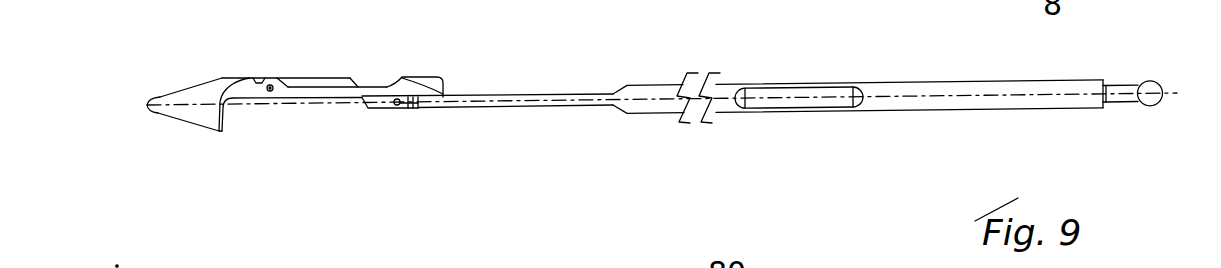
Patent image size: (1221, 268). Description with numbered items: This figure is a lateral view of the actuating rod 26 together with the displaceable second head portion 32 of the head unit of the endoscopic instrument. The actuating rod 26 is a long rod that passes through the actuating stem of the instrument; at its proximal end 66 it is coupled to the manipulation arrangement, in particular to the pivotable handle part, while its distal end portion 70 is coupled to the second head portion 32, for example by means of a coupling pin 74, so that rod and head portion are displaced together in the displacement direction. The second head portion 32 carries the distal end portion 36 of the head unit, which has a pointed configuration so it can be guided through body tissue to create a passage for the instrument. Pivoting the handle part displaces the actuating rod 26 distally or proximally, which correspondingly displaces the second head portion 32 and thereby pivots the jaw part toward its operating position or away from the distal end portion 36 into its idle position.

The distal end portion of the head unit 36 is at (151, 71).
The second head portion 32 is at (398, 77).
The coupling pin 74 is at (392, 112).
The distal end portion of the actuating rod 70 is at (511, 61).
The actuating rod 26 is at (892, 83).
The proximal end of the actuating rod 66 is at (1138, 62).